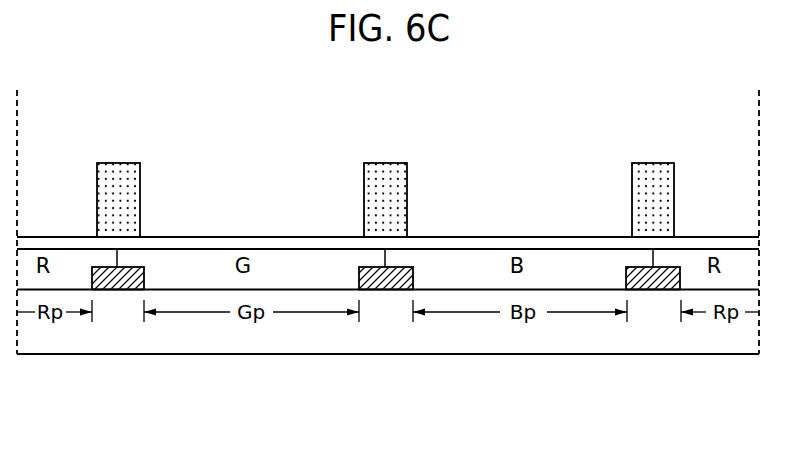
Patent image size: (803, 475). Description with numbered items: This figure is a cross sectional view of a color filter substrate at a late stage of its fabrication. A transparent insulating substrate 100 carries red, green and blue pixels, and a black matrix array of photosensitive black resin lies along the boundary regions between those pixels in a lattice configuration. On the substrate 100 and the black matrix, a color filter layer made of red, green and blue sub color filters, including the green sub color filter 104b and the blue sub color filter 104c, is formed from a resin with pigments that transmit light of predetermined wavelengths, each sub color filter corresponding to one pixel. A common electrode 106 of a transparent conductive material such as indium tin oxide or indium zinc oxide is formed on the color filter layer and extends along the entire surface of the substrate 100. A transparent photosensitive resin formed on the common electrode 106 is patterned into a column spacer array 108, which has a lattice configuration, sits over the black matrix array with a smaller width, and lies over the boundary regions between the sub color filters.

The transparent insulating substrate 100 is at (597, 347).
The green sub color filter 104b is at (310, 262).
The blue sub color filter 104c is at (452, 262).
The common electrode 106 is at (561, 237).
The column spacer array 108 is at (141, 186).